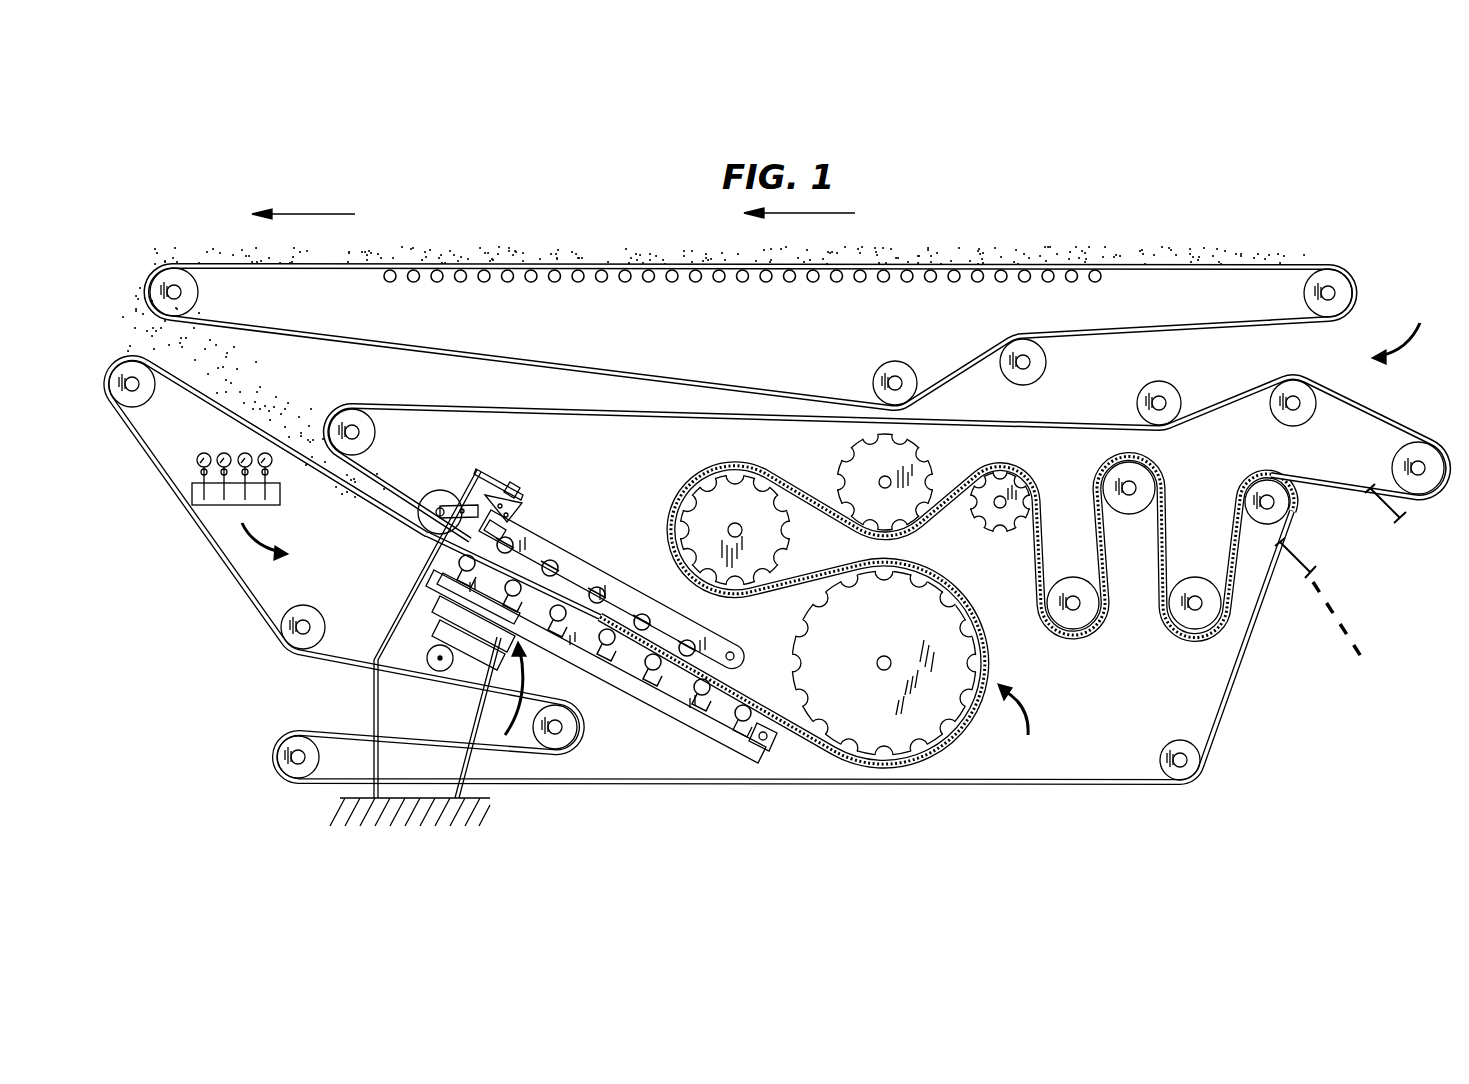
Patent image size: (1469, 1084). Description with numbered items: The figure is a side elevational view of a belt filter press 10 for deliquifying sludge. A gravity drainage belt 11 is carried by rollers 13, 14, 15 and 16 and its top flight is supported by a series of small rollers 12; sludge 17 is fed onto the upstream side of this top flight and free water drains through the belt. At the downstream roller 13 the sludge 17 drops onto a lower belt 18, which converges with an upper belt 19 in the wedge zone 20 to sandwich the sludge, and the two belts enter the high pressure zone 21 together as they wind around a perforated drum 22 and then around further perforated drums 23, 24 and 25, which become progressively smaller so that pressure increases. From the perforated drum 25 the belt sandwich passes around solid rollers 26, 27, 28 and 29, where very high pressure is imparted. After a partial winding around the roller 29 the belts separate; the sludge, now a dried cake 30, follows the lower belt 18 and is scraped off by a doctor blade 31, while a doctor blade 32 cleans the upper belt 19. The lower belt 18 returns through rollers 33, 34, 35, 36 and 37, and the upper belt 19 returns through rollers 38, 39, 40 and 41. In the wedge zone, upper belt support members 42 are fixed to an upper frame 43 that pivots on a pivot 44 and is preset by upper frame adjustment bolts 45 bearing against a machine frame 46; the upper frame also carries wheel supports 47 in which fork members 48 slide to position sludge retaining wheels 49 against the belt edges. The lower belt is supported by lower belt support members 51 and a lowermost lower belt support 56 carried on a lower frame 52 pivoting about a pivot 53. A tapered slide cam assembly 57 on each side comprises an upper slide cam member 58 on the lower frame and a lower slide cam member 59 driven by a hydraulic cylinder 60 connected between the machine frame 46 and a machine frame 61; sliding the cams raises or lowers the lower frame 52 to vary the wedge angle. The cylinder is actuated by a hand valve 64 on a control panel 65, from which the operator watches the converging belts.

The belt filter press 10 is at (1405, 329).
The gravity drainage belt 11 is at (680, 374).
The small rollers 12 is at (1082, 283).
The roller 13 is at (198, 292).
The roller 14 is at (880, 366).
The roller 15 is at (1046, 362).
The roller 16 is at (1304, 293).
The sludge 17 is at (1046, 262).
The lower belt 18 is at (385, 513).
The upper belt 19 is at (388, 410).
The wedge zone 20 is at (596, 562).
The high pressure zone 21 is at (1018, 720).
The perforated drum 22 is at (795, 656).
The perforated drum 23 is at (700, 475).
The perforated drum 24 is at (845, 462).
The perforated drum 25 is at (1000, 532).
The solid roller 26 is at (1072, 578).
The solid roller 27 is at (1129, 513).
The solid roller 28 is at (1195, 578).
The solid roller 29 is at (1267, 480).
The dried cake 30 is at (1352, 662).
The doctor blade 31 is at (1310, 562).
The doctor blade 32 is at (1404, 510).
The roller 33 is at (1165, 752).
The roller 34 is at (278, 757).
The roller 35 is at (579, 727).
The roller 36 is at (304, 607).
The roller 37 is at (148, 396).
The roller 38 is at (1422, 445).
The roller 39 is at (1306, 408).
The roller 40 is at (1172, 392).
The roller 41 is at (340, 418).
The upper belt support members 42 is at (567, 562).
The upper frame 43 is at (627, 589).
The pivot 44 is at (738, 654).
The upper frame adjustment bolts 45 is at (530, 512).
The machine frame 46 is at (477, 468).
The wheel supports 47 is at (505, 484).
The fork members 48 is at (522, 488).
The sludge retaining wheels 49 is at (435, 492).
The lower belt support members 51 is at (512, 598).
The lower frame 52 is at (619, 703).
The pivot 53 is at (768, 746).
The lowermost lower belt support 56 is at (740, 725).
The tapered slide cam assembly 57 is at (514, 688).
The upper slide cam member 58 is at (432, 590).
The hydraulic cylinder 60 is at (432, 620).
The machine frame 61 is at (452, 712).
The lower slide cam member 59 is at (490, 650).
The hand valve 64 is at (282, 492).
The panel 65 is at (271, 542).